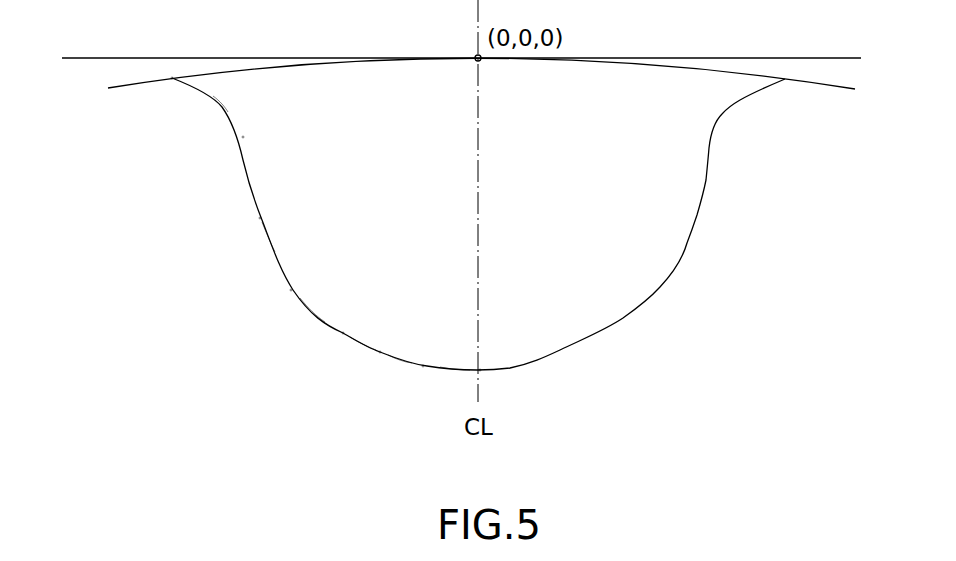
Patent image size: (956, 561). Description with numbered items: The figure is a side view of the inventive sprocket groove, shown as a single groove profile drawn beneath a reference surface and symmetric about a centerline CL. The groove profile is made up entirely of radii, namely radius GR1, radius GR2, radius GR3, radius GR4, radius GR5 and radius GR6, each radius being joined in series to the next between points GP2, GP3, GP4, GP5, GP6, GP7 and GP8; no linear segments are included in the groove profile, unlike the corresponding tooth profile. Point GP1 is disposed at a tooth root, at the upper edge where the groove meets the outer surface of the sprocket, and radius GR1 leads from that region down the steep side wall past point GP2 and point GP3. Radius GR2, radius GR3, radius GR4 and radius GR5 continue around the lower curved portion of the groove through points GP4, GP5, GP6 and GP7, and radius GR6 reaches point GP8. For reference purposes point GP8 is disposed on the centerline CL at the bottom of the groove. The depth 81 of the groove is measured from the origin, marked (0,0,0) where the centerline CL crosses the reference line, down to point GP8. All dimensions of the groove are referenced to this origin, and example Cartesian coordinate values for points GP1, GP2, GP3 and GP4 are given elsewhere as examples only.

The depth 81 is at (478, 178).
The point GP1 is at (170, 77).
The point GP2 is at (245, 137).
The point GP3 is at (257, 219).
The point GP4 is at (289, 291).
The point GP5 is at (341, 334).
The point GP6 is at (379, 354).
The point GP7 is at (424, 361).
The point GP8 is at (482, 367).
The radius GR1 is at (226, 112).
The radius GR2 is at (328, 212).
The radius GR3 is at (355, 258).
The radius GR4 is at (402, 270).
The radius GR5 is at (422, 282).
The radius GR6 is at (465, 293).